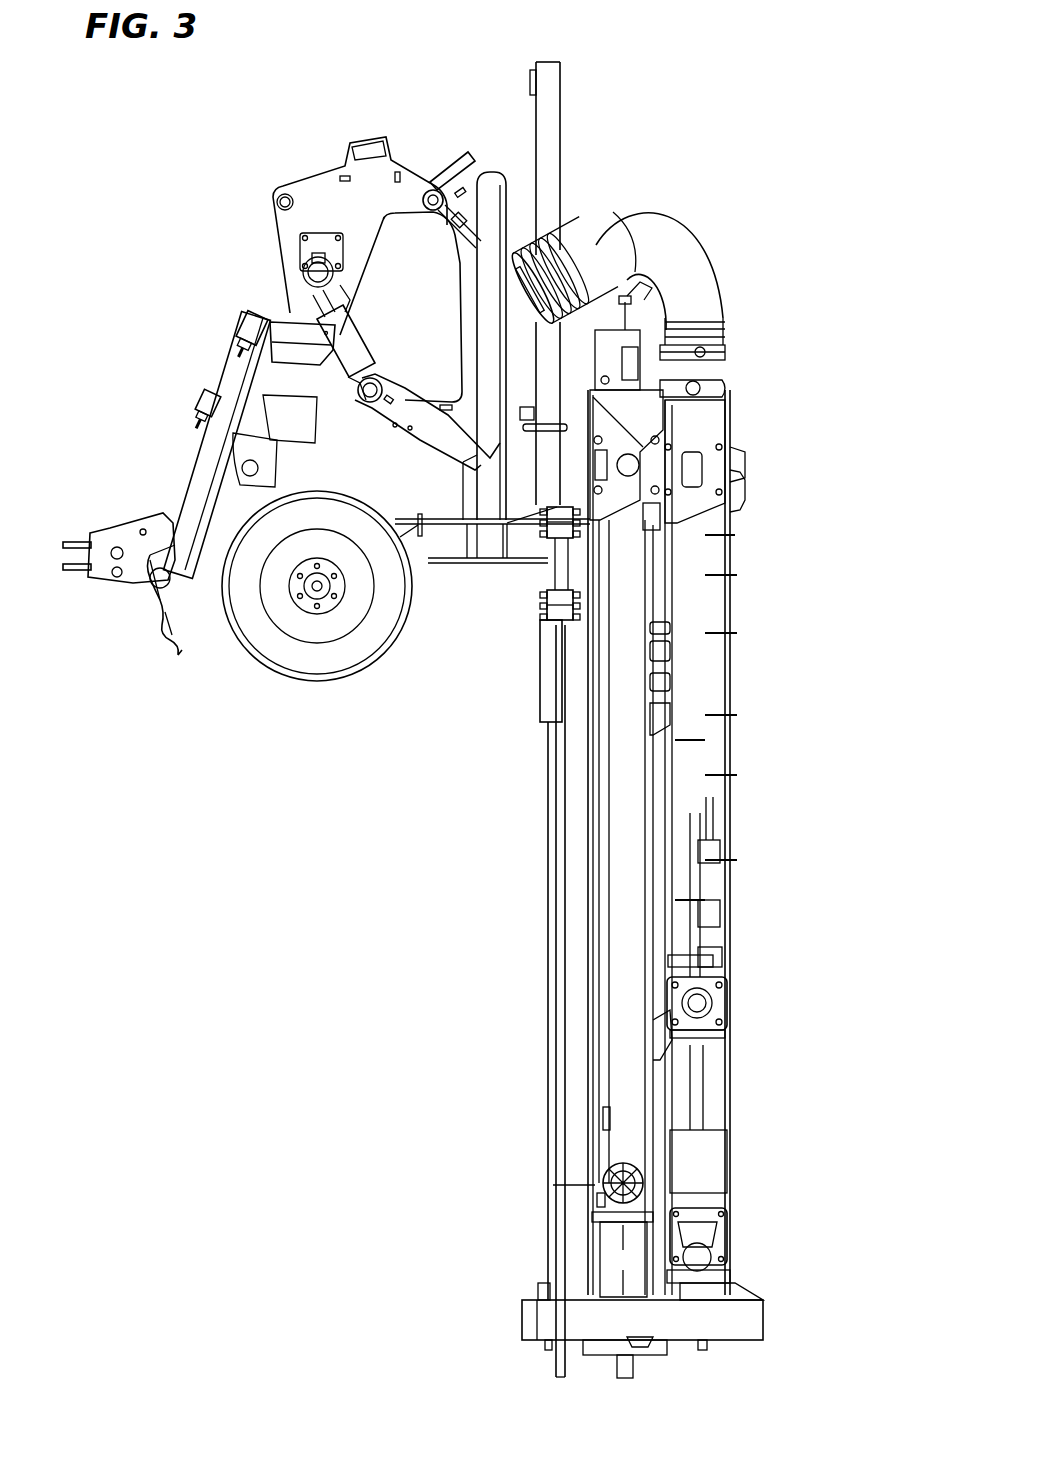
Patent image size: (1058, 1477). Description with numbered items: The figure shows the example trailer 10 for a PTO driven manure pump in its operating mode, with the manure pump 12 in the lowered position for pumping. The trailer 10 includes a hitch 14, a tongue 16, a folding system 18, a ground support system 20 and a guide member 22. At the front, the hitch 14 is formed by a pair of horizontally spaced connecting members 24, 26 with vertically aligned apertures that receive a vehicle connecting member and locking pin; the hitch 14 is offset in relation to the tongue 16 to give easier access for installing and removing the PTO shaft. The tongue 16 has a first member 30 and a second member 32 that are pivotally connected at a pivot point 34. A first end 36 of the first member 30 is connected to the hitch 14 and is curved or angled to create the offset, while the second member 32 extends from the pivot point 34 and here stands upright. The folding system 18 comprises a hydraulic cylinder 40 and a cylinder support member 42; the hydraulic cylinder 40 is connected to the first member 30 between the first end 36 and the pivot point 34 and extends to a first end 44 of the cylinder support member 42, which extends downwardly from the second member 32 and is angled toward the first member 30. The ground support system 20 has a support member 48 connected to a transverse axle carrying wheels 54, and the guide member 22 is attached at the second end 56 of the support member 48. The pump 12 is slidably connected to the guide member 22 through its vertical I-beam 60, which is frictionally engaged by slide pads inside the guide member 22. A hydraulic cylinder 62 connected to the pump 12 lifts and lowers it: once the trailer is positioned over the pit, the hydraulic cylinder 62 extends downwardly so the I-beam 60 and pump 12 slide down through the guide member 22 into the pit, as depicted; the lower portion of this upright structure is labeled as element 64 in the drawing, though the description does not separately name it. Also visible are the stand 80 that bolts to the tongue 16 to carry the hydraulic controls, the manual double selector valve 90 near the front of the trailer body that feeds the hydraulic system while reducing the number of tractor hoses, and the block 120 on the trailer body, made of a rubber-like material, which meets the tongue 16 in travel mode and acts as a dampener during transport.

The trailer 10 is at (140, 195).
The manure pump 12 is at (858, 835).
The hitch 14 is at (115, 535).
The tongue 16 is at (263, 308).
The folding system 18 is at (388, 370).
The ground support system 20 is at (460, 668).
The guide member 22 is at (533, 585).
The connecting member 24 is at (72, 540).
The connecting member 26 is at (72, 572).
The first member 30 is at (247, 425).
The second member 32 is at (482, 325).
The pivot point 34 is at (433, 210).
The first end 36 is at (175, 520).
The hydraulic cylinder 40 is at (355, 335).
The cylinder support member 42 is at (408, 393).
The first end 44 is at (370, 405).
The support member 48 is at (446, 545).
The wheels 54 is at (262, 648).
The second end 56 is at (513, 540).
The vertical I-beam 60 is at (578, 812).
The hydraulic cylinder 62 is at (538, 690).
The post 64 is at (553, 1232).
The stand 80 is at (300, 330).
The double selector valve 90 is at (240, 325).
The block 120 is at (450, 170).